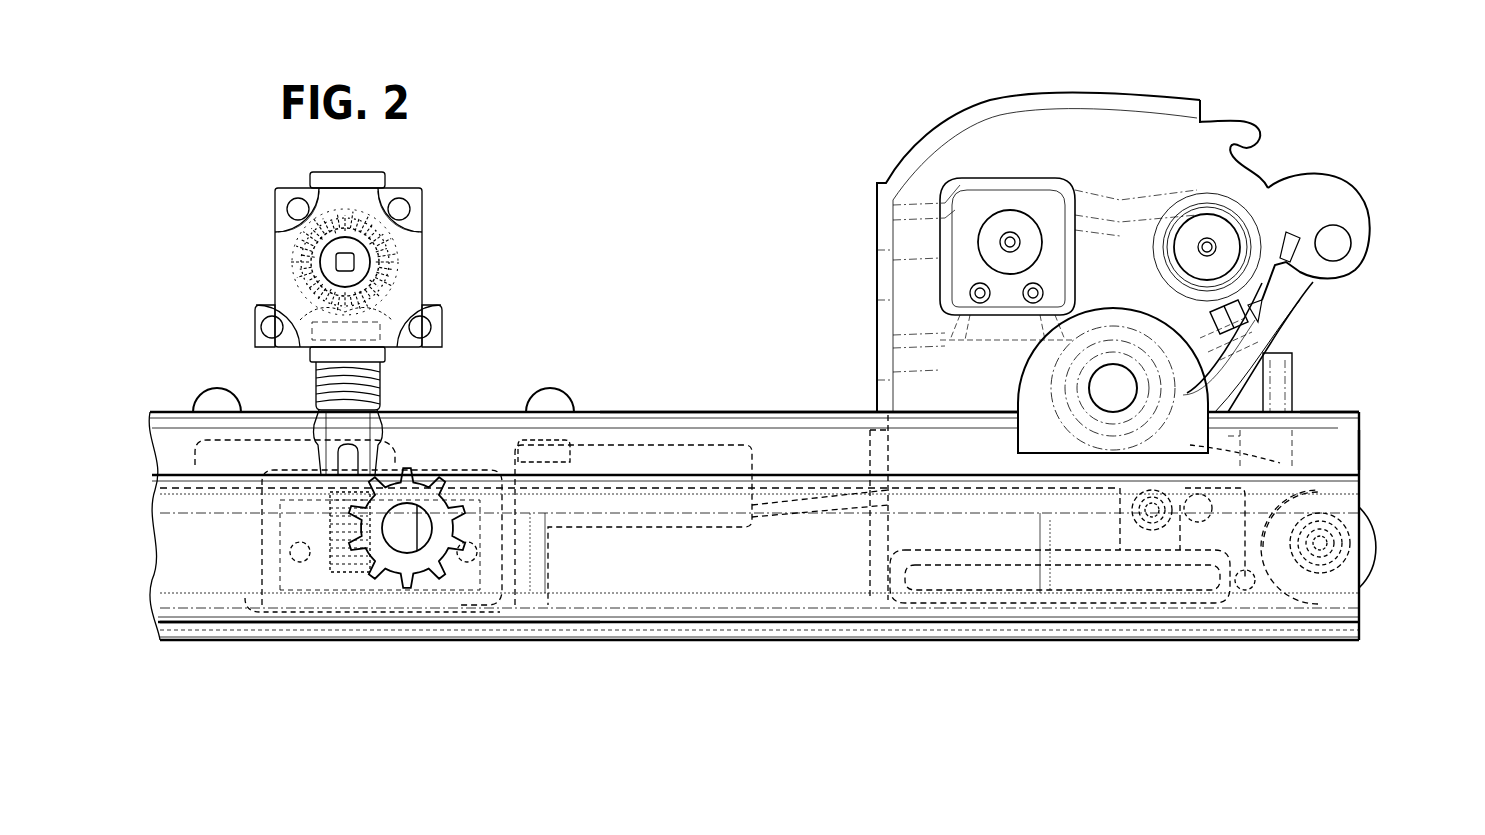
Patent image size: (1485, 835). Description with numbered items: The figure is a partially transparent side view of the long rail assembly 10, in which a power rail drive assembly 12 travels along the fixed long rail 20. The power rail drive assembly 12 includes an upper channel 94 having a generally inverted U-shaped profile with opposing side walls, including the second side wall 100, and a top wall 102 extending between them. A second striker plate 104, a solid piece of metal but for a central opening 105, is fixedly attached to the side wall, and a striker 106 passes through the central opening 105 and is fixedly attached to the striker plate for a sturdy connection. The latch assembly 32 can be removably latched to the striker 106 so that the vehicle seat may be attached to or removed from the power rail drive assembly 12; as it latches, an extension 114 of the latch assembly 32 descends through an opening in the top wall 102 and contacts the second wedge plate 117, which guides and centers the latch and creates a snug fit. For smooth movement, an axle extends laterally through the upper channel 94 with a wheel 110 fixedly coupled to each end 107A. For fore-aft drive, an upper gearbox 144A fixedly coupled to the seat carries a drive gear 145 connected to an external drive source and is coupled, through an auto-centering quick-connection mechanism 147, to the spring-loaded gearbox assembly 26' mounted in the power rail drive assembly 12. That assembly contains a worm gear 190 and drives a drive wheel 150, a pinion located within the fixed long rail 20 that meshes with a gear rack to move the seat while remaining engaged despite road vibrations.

The long rail assembly 10 is at (597, 242).
The power rail drive assembly 12 is at (1283, 390).
The fixed long rail 20 is at (1357, 665).
The spring-loaded gearbox assembly 26' is at (380, 671).
The latch assembly 32 is at (938, 113).
The upper channel 94 is at (745, 408).
The second side wall 100 is at (1340, 452).
The top wall 102 is at (1347, 412).
The second striker plate 104 is at (1283, 345).
The central opening 105 is at (1137, 378).
The striker 106 is at (1108, 385).
The end of axle 107A is at (1318, 548).
The wheel 110 is at (1378, 548).
The extension 114 is at (1300, 440).
The second wedge plate 117 is at (1259, 459).
The upper gearbox 144A is at (428, 180).
The drive gear 145 is at (410, 290).
The auto-centering quick-connection mechanism 147 is at (318, 470).
The drive wheel 150 is at (430, 576).
The worm gear 190 is at (330, 525).